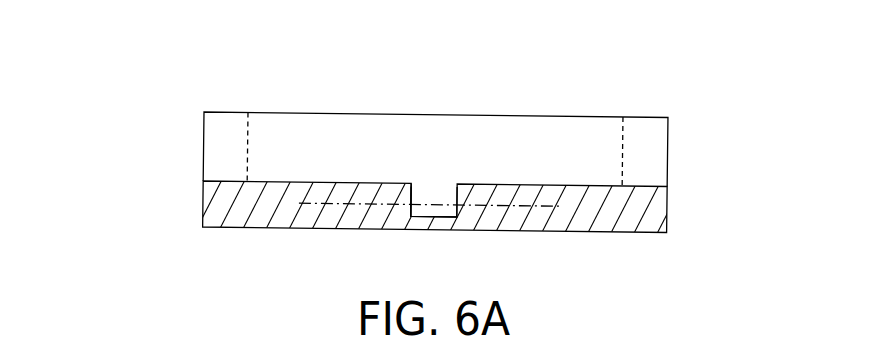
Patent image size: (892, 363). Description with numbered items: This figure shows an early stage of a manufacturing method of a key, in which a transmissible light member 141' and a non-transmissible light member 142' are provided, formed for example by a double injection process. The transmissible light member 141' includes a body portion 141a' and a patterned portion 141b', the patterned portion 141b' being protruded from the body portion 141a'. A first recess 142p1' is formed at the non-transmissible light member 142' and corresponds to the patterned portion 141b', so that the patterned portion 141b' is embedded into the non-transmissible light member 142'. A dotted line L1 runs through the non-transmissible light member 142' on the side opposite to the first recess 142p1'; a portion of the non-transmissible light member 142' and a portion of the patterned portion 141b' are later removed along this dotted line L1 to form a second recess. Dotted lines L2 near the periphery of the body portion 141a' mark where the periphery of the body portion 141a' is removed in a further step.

The transmissible light member 141' is at (435, 115).
The body portion 141a' is at (435, 123).
The patterned portion 141b' is at (456, 138).
The non-transmissible light member 142' is at (386, 195).
The first recess 142p1' is at (365, 138).
The dotted line L2 is at (248, 146).
The dotted line L1 is at (284, 230).